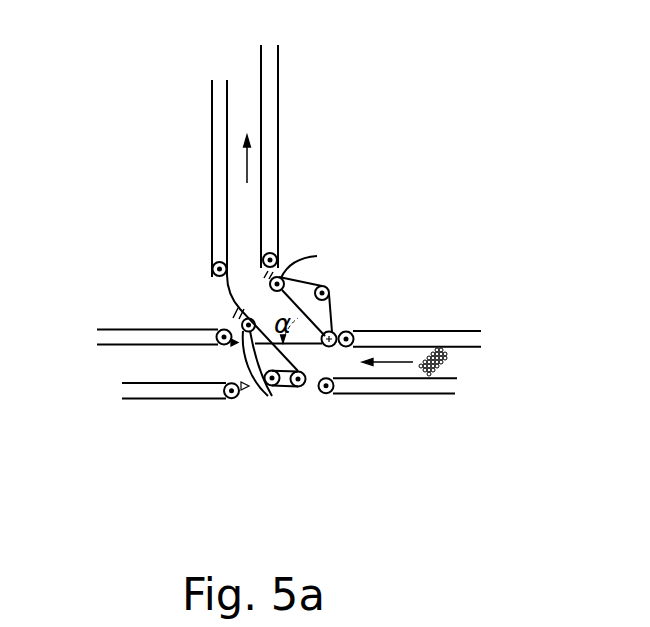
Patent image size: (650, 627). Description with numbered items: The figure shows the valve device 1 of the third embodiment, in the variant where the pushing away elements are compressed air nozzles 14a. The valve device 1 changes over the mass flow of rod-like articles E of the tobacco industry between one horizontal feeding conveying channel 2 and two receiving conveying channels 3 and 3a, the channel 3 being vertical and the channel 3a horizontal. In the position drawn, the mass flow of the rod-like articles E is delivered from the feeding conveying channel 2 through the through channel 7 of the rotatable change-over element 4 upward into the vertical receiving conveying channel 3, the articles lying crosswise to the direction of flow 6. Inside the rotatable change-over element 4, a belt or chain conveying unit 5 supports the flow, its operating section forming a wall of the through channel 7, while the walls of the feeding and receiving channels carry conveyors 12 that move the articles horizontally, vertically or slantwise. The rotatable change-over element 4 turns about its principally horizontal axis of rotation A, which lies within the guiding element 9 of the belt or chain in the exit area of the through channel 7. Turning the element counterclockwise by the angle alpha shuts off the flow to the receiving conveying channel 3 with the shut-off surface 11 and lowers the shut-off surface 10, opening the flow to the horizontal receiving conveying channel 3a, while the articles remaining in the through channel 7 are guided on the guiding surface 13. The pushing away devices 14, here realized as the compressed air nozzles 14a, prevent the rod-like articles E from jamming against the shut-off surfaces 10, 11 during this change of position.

The valve device 1 is at (348, 272).
The feeding conveying channel 2 is at (400, 377).
The receiving conveying channel 3 is at (241, 128).
The receiving conveying channel 3a is at (147, 362).
The rotatable change-over element 4 is at (308, 408).
The conveying unit 5 is at (320, 267).
The direction of flow 6 is at (247, 157).
The through channel 7 is at (299, 339).
The guiding element 9 is at (340, 332).
The shut-off surface 10 is at (266, 394).
The shut-off surface 11 is at (292, 277).
The conveyors 12 is at (210, 202).
The guiding surface 13 is at (242, 322).
The pushing away devices 14 is at (236, 397).
The compressed air nozzles 14a is at (235, 308).
The axis of rotation A is at (337, 347).
The rod-like articles E is at (448, 378).